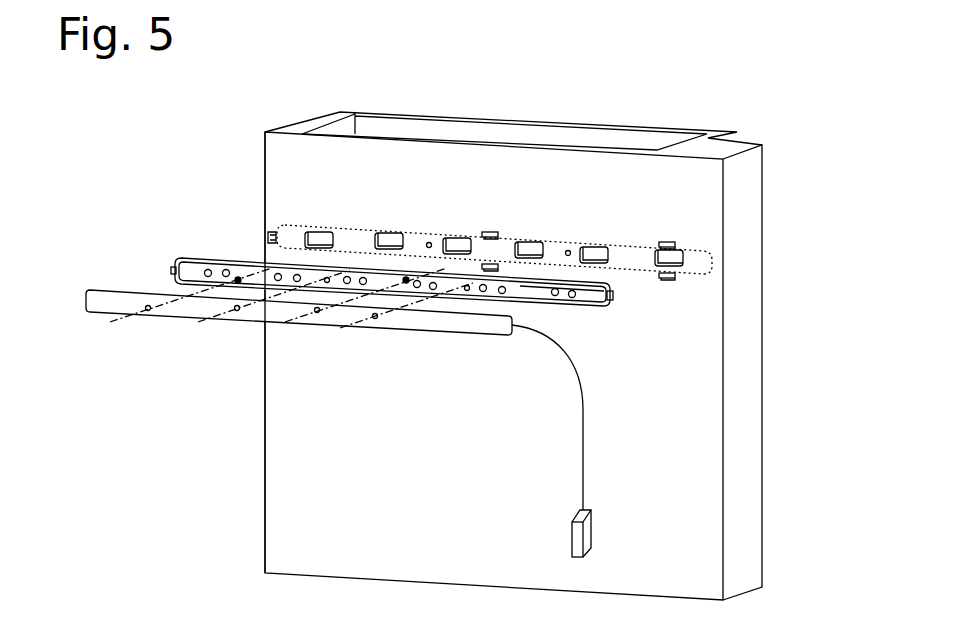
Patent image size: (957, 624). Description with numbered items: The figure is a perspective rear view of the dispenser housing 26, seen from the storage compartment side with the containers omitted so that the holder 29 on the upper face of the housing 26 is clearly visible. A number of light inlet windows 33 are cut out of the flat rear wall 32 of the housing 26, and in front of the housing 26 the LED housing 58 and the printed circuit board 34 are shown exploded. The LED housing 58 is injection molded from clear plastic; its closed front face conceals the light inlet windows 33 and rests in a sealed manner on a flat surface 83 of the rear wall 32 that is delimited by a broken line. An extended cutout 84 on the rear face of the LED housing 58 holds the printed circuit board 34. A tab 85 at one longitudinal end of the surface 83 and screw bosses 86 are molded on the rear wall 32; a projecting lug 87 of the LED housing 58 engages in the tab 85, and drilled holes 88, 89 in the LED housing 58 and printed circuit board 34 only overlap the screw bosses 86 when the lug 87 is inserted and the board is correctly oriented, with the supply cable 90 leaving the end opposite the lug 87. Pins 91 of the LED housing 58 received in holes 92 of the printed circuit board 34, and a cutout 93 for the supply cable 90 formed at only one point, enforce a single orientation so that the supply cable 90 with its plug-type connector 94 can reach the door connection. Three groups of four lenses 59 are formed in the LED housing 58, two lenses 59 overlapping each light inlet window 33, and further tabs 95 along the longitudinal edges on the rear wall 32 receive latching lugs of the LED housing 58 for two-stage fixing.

The housing 26 is at (778, 238).
The holder 29 is at (565, 138).
The rear wall 32 is at (292, 386).
The light inlet windows 33 is at (318, 238).
The printed circuit board 34 is at (127, 302).
The LED housing 58 is at (197, 258).
The lenses 59 is at (433, 290).
The flat surface 83 is at (628, 255).
The cutout 84 is at (532, 294).
The tab 85 is at (268, 236).
The screw bosses 86 is at (429, 243).
The projecting lug 87 is at (172, 270).
The drilled holes 88 is at (326, 279).
The drilled holes 89 is at (237, 312).
The supply cable 90 is at (584, 410).
The pins 91 is at (238, 278).
The holes 92 is at (148, 312).
The cutout 93 is at (612, 299).
The plug-type connector 94 is at (587, 530).
The tabs 95 is at (487, 232).